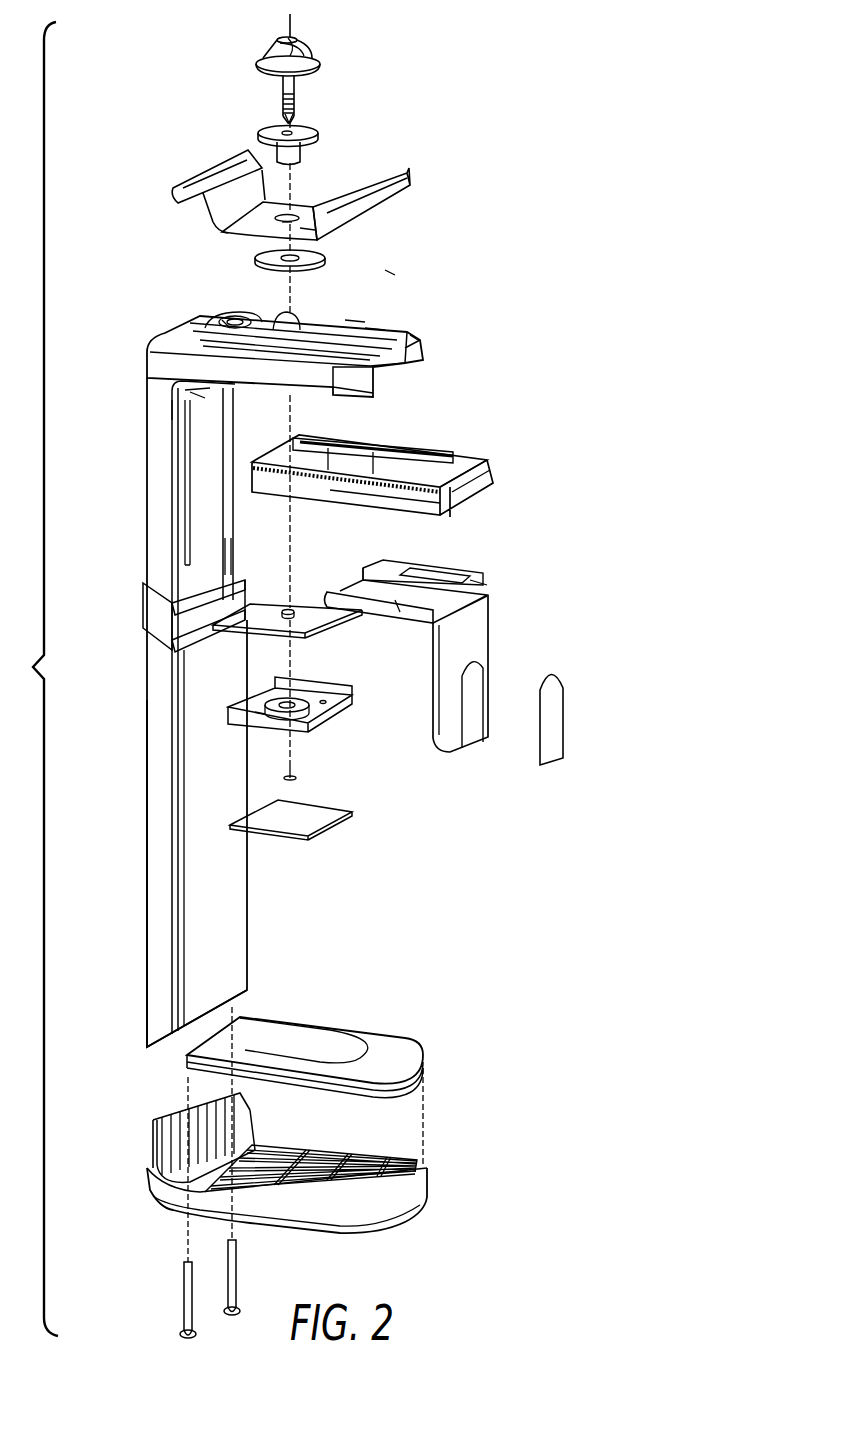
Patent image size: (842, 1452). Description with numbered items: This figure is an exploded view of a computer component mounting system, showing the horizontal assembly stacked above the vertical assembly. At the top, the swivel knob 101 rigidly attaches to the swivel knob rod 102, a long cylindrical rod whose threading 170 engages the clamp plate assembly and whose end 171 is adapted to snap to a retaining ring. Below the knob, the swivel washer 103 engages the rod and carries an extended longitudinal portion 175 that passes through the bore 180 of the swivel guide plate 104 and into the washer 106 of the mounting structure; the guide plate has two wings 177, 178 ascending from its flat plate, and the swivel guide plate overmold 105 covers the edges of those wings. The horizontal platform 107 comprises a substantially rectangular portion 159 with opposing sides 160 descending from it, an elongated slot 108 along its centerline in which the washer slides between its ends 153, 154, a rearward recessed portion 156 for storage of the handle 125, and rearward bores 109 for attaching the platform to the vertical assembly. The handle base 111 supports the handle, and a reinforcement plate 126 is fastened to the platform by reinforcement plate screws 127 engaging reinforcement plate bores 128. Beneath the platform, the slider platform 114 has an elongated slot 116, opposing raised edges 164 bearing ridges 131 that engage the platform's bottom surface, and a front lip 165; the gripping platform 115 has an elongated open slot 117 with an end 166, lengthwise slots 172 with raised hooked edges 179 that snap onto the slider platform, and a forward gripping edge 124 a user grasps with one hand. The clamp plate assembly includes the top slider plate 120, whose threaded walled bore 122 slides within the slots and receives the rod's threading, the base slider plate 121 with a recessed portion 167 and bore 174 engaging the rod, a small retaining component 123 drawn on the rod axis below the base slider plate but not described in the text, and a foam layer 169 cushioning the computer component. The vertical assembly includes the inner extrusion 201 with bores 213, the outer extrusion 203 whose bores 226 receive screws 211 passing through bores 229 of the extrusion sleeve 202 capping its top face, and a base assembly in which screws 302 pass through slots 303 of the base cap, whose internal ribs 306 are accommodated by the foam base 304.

The swivel knob 101 is at (306, 50).
The swivel knob rod 102 is at (300, 77).
The threading 170 is at (283, 101).
The end 171 is at (296, 115).
The swivel washer 103 is at (320, 132).
The extended longitudinal portion 175 is at (301, 153).
The wing 177 is at (285, 181).
The bore 174 is at (264, 218).
The swivel guide plate 104 is at (291, 212).
The wing 178 is at (323, 228).
The swivel guide plate overmold 105 is at (391, 184).
The bore 180 is at (287, 210).
The washer 106 is at (326, 258).
The rearward bores 109 is at (295, 317).
The opposing sides 160 is at (425, 354).
The handle 125 is at (232, 318).
The handle base 111 is at (218, 318).
The rearward recessed portion 156 is at (232, 316).
The end 153 is at (284, 328).
The horizontal platform 107 is at (352, 320).
The elongated slot 108 is at (370, 328).
The end 154 is at (427, 332).
The rectangular portion 159 is at (390, 268).
The inner extrusion 201 is at (160, 484).
The outer extrusion 203 is at (160, 743).
The bores 213 is at (183, 452).
The reinforcement plate bores 128 is at (175, 413).
The reinforcement plate 126 is at (200, 386).
The reinforcement plate screws 127 is at (195, 390).
The screws 211 is at (199, 565).
The extrusion sleeve 202 is at (180, 599).
The bores 229 is at (160, 610).
The bores 226 is at (173, 632).
The top slider plate 120 is at (302, 601).
The threaded walled bore 122 is at (292, 609).
The base slider plate 121 is at (309, 723).
The recessed portion 167 is at (262, 715).
The nut 123 is at (297, 777).
The foam layer 169 is at (305, 820).
The slider platform 114 is at (408, 476).
The elongated slot 116 is at (388, 447).
The ridges 131 is at (332, 462).
The opposing raised edges 164 is at (484, 457).
The front lip 165 is at (473, 488).
The gripping platform 115 is at (442, 640).
The raised hooked edges 179 is at (407, 578).
The lengthwise slots 172 is at (438, 575).
The end 166 is at (487, 590).
The gripping edge 124 is at (475, 640).
The elongated open slot 117 is at (397, 603).
The foam base 304 is at (383, 1046).
The slots 303 is at (249, 1163).
The internal ribs 306 is at (330, 1163).
The screws 302 is at (186, 1292).